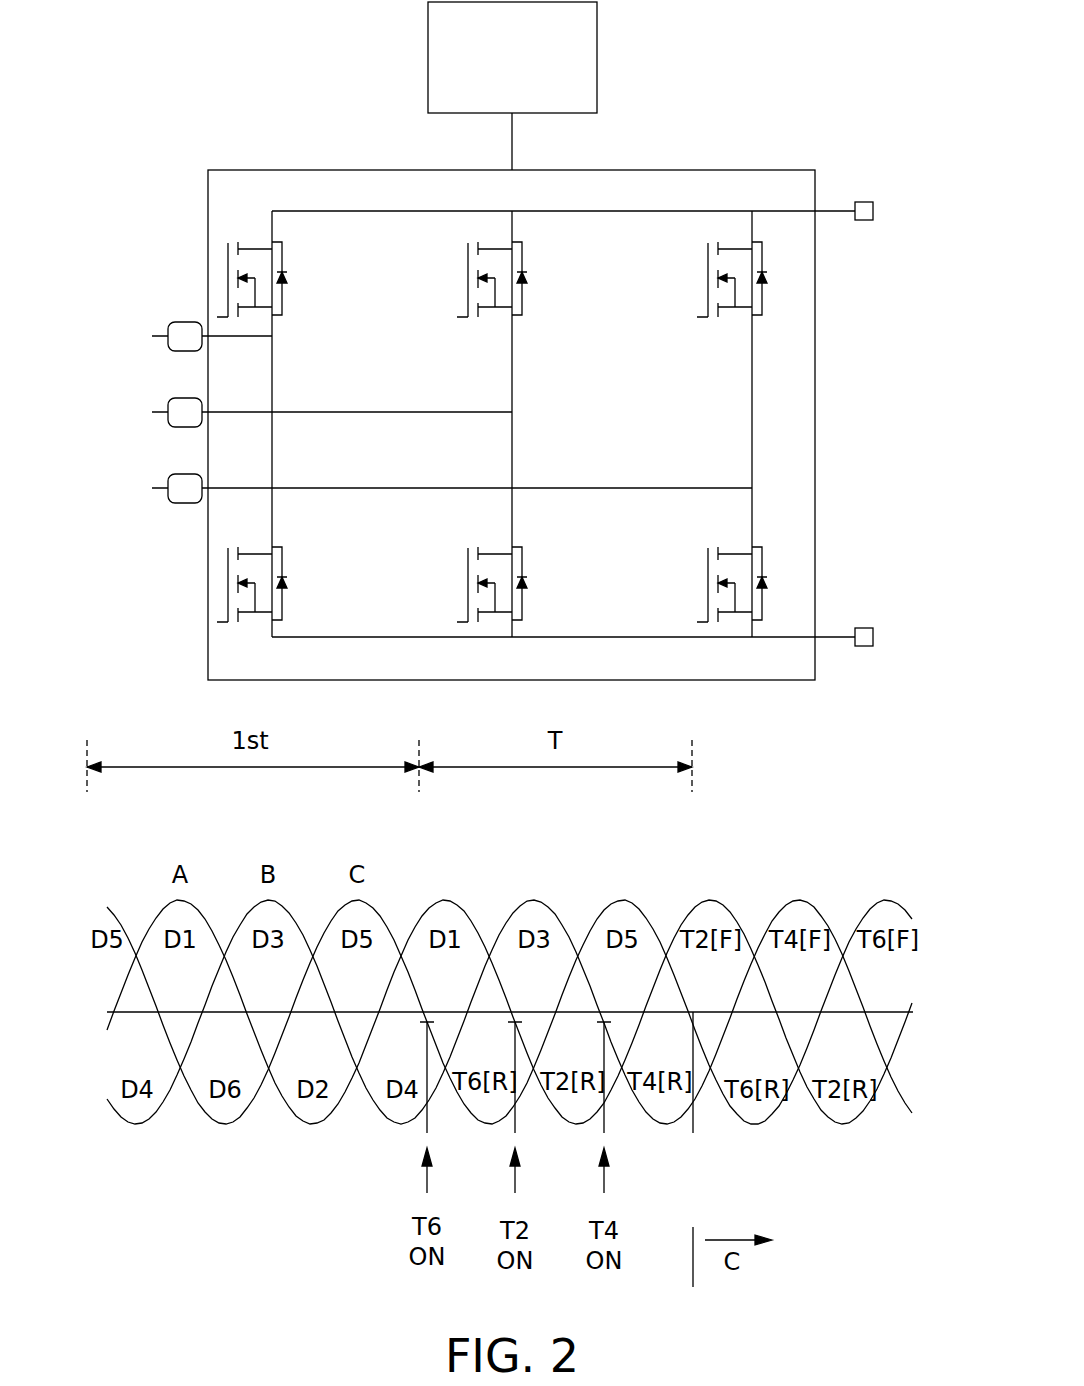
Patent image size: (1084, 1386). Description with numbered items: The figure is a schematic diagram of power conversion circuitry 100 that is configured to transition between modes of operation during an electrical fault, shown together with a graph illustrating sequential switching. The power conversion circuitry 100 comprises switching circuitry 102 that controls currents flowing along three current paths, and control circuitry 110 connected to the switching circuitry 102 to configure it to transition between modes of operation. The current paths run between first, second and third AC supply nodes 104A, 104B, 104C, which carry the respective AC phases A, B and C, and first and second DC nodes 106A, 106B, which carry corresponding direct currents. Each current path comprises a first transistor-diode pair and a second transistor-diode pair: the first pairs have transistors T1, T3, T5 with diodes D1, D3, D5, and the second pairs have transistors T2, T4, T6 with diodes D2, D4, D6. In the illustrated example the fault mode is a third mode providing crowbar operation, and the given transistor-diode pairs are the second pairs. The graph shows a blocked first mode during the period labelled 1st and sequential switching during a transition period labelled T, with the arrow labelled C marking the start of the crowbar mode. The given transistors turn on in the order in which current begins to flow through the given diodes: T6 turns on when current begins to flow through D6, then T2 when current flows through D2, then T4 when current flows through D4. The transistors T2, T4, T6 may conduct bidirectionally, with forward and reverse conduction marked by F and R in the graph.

The power conversion circuitry 100 is at (246, 113).
The switching circuitry 102 is at (694, 170).
The first AC supply node 104A is at (185, 322).
The second AC supply node 104B is at (185, 398).
The third AC supply node 104C is at (185, 503).
The first DC node 106A is at (862, 202).
The second DC node 106B is at (862, 628).
The control circuitry 110 is at (491, 70).
The transistor of first transistor-diode pair T1 is at (244, 262).
The transistor of second transistor-diode pair T2 is at (244, 600).
The transistor of first transistor-diode pair T3 is at (470, 278).
The transistor of second transistor-diode pair T4 is at (470, 584).
The transistor of first transistor-diode pair T5 is at (711, 278).
The transistor of second transistor-diode pair T6 is at (711, 584).
The diode of first transistor-diode pair D1 is at (298, 278).
The diode of second transistor-diode pair D2 is at (298, 583).
The diode of first transistor-diode pair D3 is at (538, 278).
The diode of second transistor-diode pair D4 is at (538, 583).
The diode of first transistor-diode pair D5 is at (778, 278).
The diode of second transistor-diode pair D6 is at (778, 583).